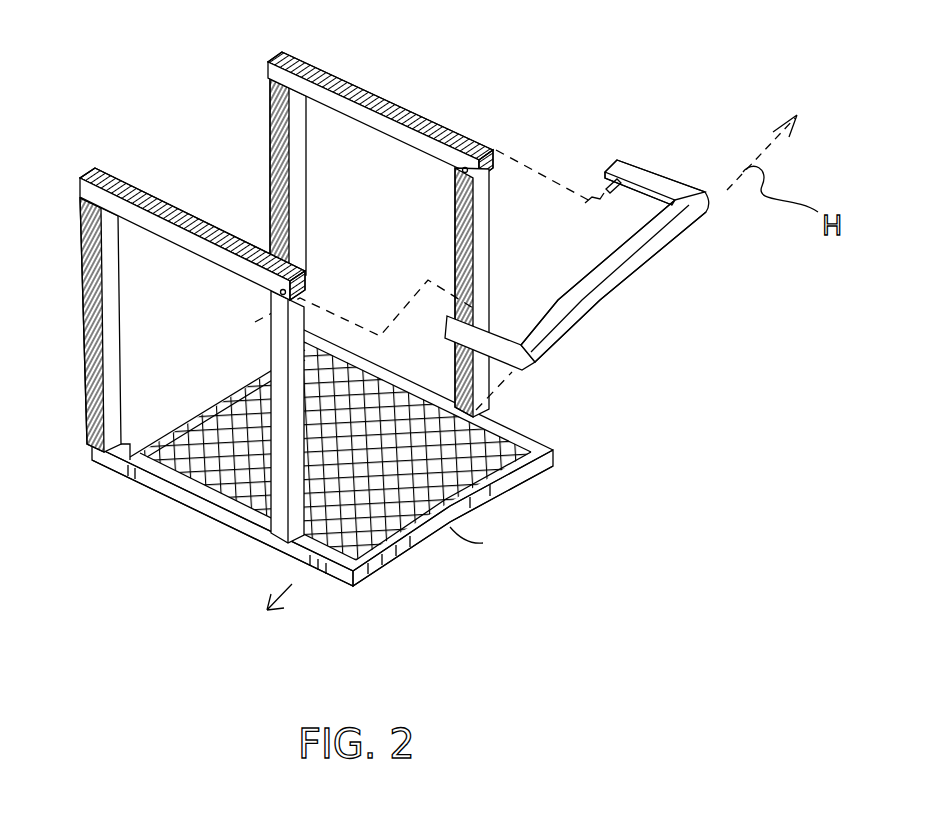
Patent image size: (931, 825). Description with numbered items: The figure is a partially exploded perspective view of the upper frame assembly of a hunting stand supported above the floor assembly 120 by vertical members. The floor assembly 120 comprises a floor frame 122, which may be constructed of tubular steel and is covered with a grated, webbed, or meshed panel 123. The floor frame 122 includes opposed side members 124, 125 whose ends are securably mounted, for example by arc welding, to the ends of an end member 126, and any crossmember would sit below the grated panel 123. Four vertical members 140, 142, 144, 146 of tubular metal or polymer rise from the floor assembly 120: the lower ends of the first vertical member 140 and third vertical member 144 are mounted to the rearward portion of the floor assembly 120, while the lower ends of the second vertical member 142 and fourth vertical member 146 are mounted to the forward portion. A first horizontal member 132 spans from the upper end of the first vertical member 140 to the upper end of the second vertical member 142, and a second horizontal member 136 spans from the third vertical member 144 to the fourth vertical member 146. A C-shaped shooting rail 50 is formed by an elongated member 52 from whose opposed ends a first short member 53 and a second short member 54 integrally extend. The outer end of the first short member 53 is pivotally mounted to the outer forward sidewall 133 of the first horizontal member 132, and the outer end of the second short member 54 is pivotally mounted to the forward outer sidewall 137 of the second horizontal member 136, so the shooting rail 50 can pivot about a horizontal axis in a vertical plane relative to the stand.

The floor assembly 120 is at (315, 499).
The floor frame 122 is at (166, 497).
The grated panel 123 is at (203, 507).
The side member 124 is at (167, 480).
The side member 125 is at (517, 425).
The end member 126 is at (230, 403).
The first horizontal member 132 is at (140, 196).
The outer forward sidewall 133 is at (258, 285).
The second horizontal member 136 is at (308, 65).
The forward outer sidewall 137 is at (494, 165).
The first vertical member 140 is at (88, 382).
The second vertical member 142 is at (265, 352).
The third vertical member 144 is at (309, 225).
The fourth vertical member 146 is at (456, 210).
The shooting rail 50 is at (631, 238).
The elongated member 52 is at (617, 283).
The first short member 53 is at (565, 332).
The second short member 54 is at (661, 176).